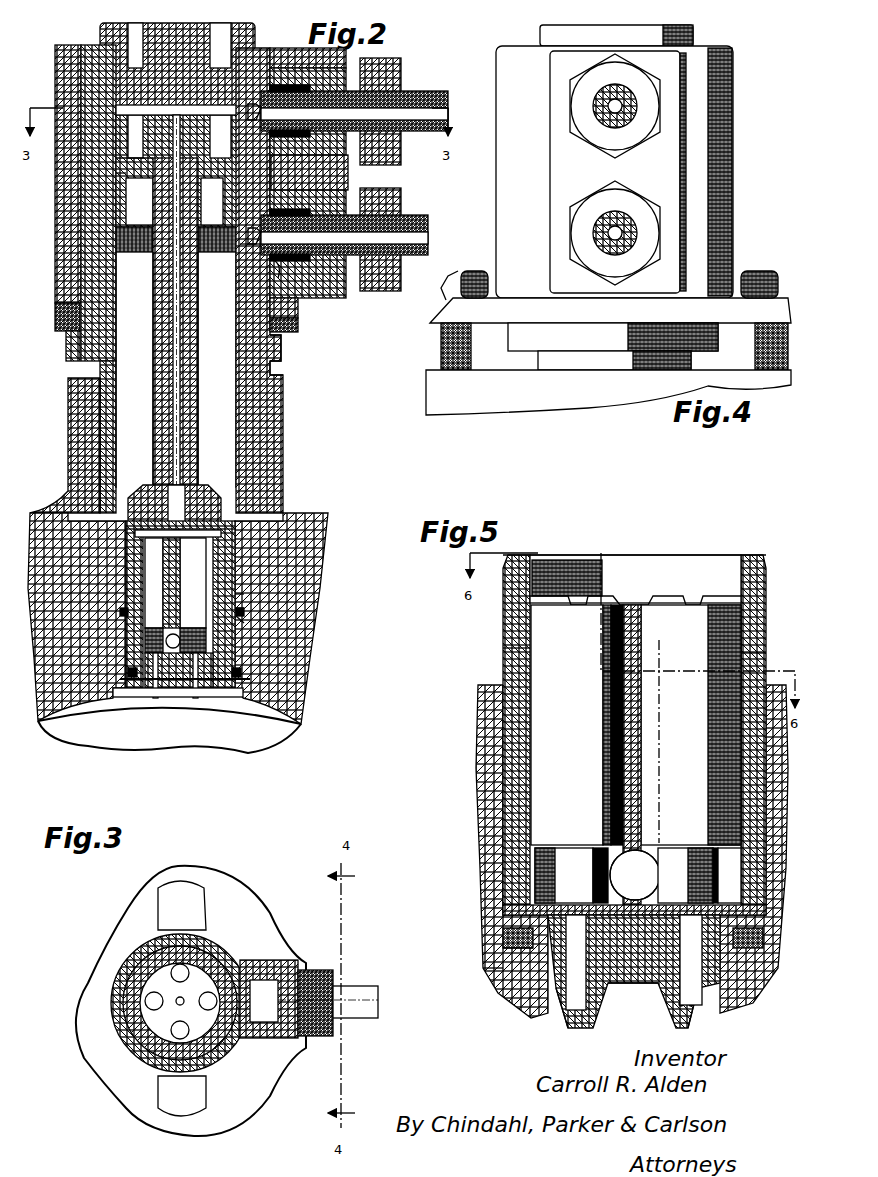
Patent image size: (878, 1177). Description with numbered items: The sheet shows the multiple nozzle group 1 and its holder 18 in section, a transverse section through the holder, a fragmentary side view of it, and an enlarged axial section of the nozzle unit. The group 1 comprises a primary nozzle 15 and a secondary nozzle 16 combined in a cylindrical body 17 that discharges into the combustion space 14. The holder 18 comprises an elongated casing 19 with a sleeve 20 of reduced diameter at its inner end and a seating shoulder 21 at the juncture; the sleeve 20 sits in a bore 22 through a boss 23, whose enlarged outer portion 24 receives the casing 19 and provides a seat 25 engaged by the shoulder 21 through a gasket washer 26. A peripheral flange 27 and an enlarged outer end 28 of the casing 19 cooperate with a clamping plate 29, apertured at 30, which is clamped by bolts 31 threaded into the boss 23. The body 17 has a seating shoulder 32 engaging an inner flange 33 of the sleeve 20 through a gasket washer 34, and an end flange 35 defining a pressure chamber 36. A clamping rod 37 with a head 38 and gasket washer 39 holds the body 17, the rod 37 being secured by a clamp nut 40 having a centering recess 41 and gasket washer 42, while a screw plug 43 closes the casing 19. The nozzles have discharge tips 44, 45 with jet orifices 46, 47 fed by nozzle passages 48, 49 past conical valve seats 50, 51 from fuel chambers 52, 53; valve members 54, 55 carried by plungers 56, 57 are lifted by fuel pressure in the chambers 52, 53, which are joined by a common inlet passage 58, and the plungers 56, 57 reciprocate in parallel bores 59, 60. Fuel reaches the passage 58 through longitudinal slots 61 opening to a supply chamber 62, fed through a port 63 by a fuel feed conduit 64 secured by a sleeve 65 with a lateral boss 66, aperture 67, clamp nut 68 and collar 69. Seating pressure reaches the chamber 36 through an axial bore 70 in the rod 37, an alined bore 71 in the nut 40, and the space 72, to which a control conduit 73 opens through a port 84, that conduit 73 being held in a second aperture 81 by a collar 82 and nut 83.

In FIG. 2, the multiple nozzle group 1 is at (246, 483).
In FIG. 2, the combustion space 14 is at (160, 740).
In FIG. 2, the primary nozzle 15 is at (146, 692).
In FIG. 2, the secondary nozzle 16 is at (186, 692).
In FIG. 2, the cylindrical body 17 is at (125, 582).
In FIG. 5, the cylindrical body 17 is at (500, 647).
In FIG. 2, the holder 18 is at (284, 337).
In FIG. 2, the elongated casing 19 is at (262, 362).
In FIG. 4, the elongated casing 19 is at (550, 355).
In FIG. 2, the sleeve 20 is at (246, 641).
In FIG. 5, the sleeve 20 is at (484, 805).
In FIG. 2, the annular peripheral seating shoulder 21 is at (240, 586).
In FIG. 2, the bore 22 is at (105, 688).
In FIG. 5, the bore 22 is at (523, 1010).
In FIG. 2, the boss 23 is at (68, 397).
In FIG. 4, the boss 23 is at (434, 377).
In FIG. 2, the enlarged outer portion of the bore 24 is at (92, 418).
In FIG. 2, the outwardly facing annular seat 25 is at (238, 616).
In FIG. 2, the gasket washer 26 is at (237, 603).
In FIG. 2, the peripheral flange 27 is at (62, 345).
In FIG. 4, the peripheral flange 27 is at (512, 332).
In FIG. 2, the enlarged outer end of the casing 28 is at (85, 221).
In FIG. 3, the enlarged outer end of the casing 28 is at (118, 994).
In FIG. 2, the clamping plate 29 is at (58, 309).
In FIG. 4, the clamping plate 29 is at (734, 312).
In FIG. 3, the clamping plate 29 is at (138, 916).
In FIG. 2, the aperture 30 is at (291, 314).
In FIG. 4, the bolts 31 is at (762, 275).
In FIG. 3, the bolts 31 is at (158, 896).
In FIG. 2, the annular peripheral seating shoulder 32 is at (230, 662).
In FIG. 5, the annular peripheral seating shoulder 32 is at (497, 925).
In FIG. 2, the inner peripheral flange 33 is at (120, 690).
In FIG. 5, the inner peripheral flange 33 is at (500, 962).
In FIG. 2, the gasket washer 34 is at (229, 672).
In FIG. 5, the gasket washer 34 is at (497, 938).
In FIG. 2, the peripheral end flange 35 is at (212, 525).
In FIG. 5, the peripheral end flange 35 is at (758, 560).
In FIG. 2, the central recess or chamber 36 is at (172, 528).
In FIG. 5, the central recess or chamber 36 is at (655, 555).
In FIG. 2, the clamping rod 37 is at (182, 347).
In FIG. 2, the head 38 is at (188, 485).
In FIG. 2, the gasket washer 39 is at (128, 486).
In FIG. 2, the clamp nut 40 is at (110, 188).
In FIG. 3, the clamp nut 40 is at (212, 1052).
In FIG. 2, the centering recess 41 is at (110, 172).
In FIG. 2, the gasket washer 42 is at (112, 156).
In FIG. 2, the screw plug 43 is at (92, 22).
In FIG. 4, the screw plug 43 is at (686, 26).
In FIG. 5, the discharge tip 44 is at (585, 1018).
In FIG. 5, the discharge tip 45 is at (668, 1020).
In FIG. 5, the jet orifices 46 is at (550, 1010).
In FIG. 5, the jet orifices 47 is at (692, 1000).
In FIG. 5, the nozzle passage 48 is at (578, 978).
In FIG. 5, the nozzle passage 49 is at (712, 960).
In FIG. 5, the conical valve seat 50 is at (570, 895).
In FIG. 5, the conical valve seat 51 is at (676, 895).
In FIG. 5, the fuel chamber 52 is at (548, 850).
In FIG. 5, the fuel chamber 53 is at (729, 875).
In FIG. 2, the valve member 54 is at (158, 628).
In FIG. 5, the valve member 54 is at (565, 858).
In FIG. 2, the valve member 55 is at (172, 624).
In FIG. 5, the valve member 55 is at (655, 877).
In FIG. 2, the plunger 56 is at (140, 556).
In FIG. 5, the plunger 56 is at (567, 725).
In FIG. 2, the plunger 57 is at (186, 565).
In FIG. 5, the plunger 57 is at (691, 725).
In FIG. 5, the common fuel inlet passage 58 is at (650, 852).
In FIG. 5, the bore 59 is at (500, 640).
In FIG. 5, the bore 60 is at (740, 645).
In FIG. 5, the longitudinal slots 61 is at (652, 790).
In FIG. 2, the supply chamber 62 is at (215, 402).
In FIG. 2, the port 63 is at (250, 242).
In FIG. 2, the fuel feed conduit 64 is at (398, 212).
In FIG. 4, the fuel feed conduit 64 is at (622, 212).
In FIG. 2, the sleeve 65 is at (58, 205).
In FIG. 4, the sleeve 65 is at (726, 188).
In FIG. 3, the sleeve 65 is at (118, 932).
In FIG. 2, the lateral boss 66 is at (330, 288).
In FIG. 4, the lateral boss 66 is at (552, 153).
In FIG. 3, the lateral boss 66 is at (276, 952).
In FIG. 2, the aperture 67 is at (268, 268).
In FIG. 2, the clamp nut 68 is at (394, 187).
In FIG. 4, the clamp nut 68 is at (562, 222).
In FIG. 2, the collar 69 is at (295, 292).
In FIG. 2, the axial passage or bore 70 is at (172, 326).
In FIG. 2, the axial bore 71 is at (178, 171).
In FIG. 3, the axial bore 71 is at (164, 996).
In FIG. 2, the space 72 is at (158, 99).
In FIG. 2, the control conduit 73 is at (398, 92).
In FIG. 4, the control conduit 73 is at (620, 86).
In FIG. 3, the control conduit 73 is at (338, 984).
In FIG. 2, the second aperture 81 is at (340, 166).
In FIG. 2, the collar 82 is at (305, 81).
In FIG. 3, the collar 82 is at (272, 1030).
In FIG. 2, the nut 83 is at (394, 66).
In FIG. 4, the nut 83 is at (562, 80).
In FIG. 3, the nut 83 is at (310, 962).
In FIG. 2, the port 84 is at (238, 98).
In FIG. 3, the port 84 is at (216, 998).